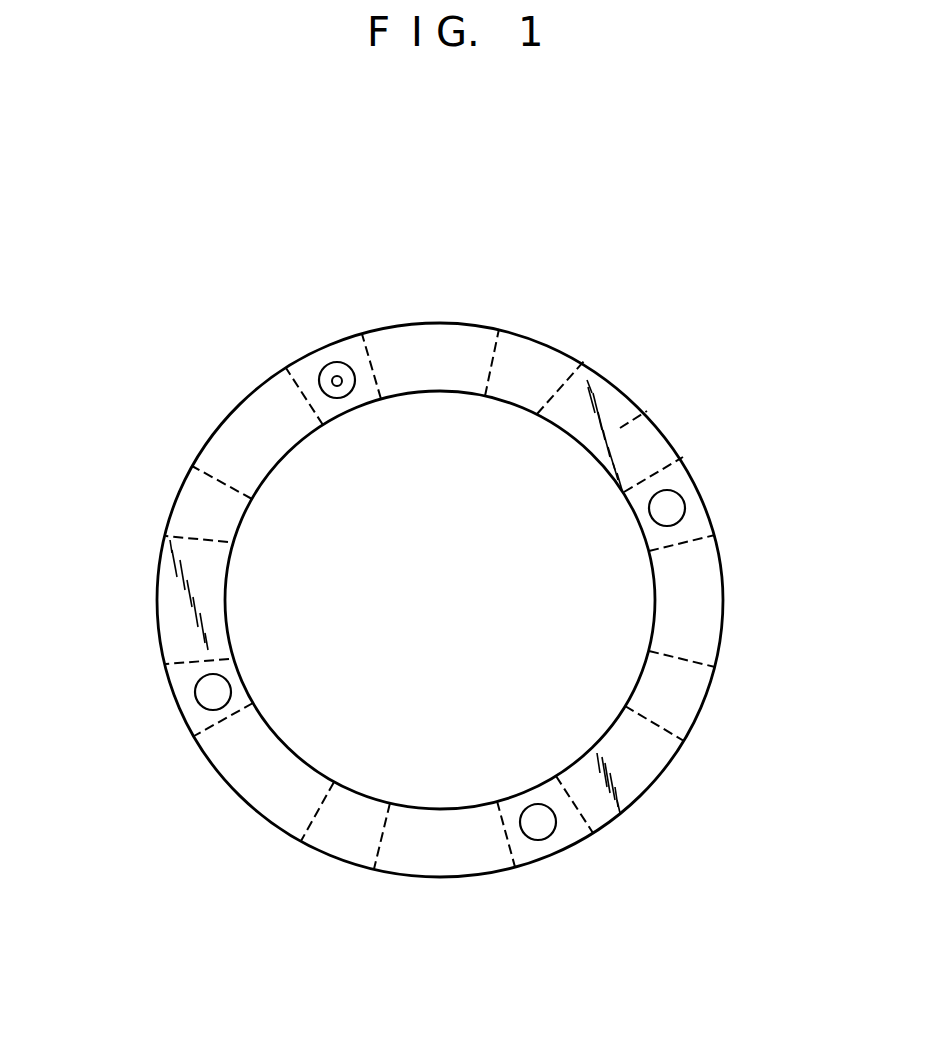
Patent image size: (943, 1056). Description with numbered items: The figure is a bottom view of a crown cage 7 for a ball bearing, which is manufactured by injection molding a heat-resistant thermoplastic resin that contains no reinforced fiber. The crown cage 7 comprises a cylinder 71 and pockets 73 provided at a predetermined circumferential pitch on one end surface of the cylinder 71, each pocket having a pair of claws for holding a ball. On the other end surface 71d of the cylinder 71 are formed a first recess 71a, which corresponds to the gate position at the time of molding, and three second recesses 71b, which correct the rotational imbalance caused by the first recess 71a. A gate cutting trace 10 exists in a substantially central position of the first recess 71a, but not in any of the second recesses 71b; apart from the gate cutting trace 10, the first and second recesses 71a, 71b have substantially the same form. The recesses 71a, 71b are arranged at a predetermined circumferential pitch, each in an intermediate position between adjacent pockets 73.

The crown cage 7 is at (637, 373).
The cylinder 71 is at (155, 622).
The first recess 71a is at (330, 368).
The second recesses 71b is at (677, 500).
The other end surface 71d is at (692, 710).
The pockets 73 is at (438, 350).
The gate cutting trace 10 is at (333, 381).